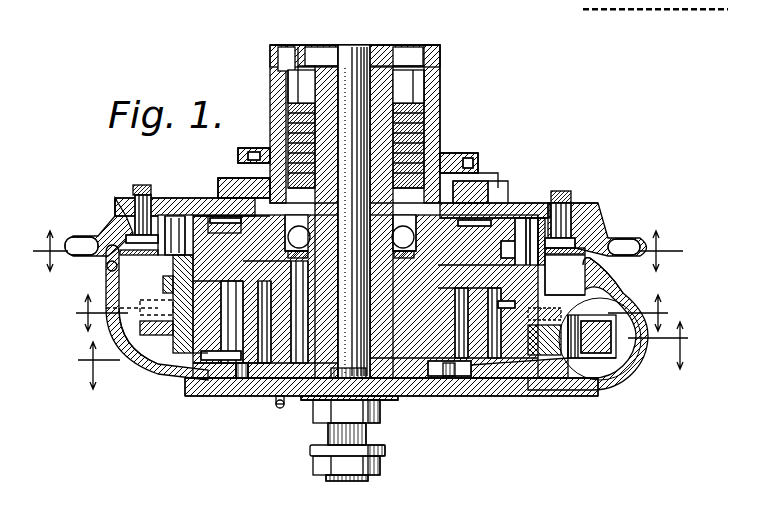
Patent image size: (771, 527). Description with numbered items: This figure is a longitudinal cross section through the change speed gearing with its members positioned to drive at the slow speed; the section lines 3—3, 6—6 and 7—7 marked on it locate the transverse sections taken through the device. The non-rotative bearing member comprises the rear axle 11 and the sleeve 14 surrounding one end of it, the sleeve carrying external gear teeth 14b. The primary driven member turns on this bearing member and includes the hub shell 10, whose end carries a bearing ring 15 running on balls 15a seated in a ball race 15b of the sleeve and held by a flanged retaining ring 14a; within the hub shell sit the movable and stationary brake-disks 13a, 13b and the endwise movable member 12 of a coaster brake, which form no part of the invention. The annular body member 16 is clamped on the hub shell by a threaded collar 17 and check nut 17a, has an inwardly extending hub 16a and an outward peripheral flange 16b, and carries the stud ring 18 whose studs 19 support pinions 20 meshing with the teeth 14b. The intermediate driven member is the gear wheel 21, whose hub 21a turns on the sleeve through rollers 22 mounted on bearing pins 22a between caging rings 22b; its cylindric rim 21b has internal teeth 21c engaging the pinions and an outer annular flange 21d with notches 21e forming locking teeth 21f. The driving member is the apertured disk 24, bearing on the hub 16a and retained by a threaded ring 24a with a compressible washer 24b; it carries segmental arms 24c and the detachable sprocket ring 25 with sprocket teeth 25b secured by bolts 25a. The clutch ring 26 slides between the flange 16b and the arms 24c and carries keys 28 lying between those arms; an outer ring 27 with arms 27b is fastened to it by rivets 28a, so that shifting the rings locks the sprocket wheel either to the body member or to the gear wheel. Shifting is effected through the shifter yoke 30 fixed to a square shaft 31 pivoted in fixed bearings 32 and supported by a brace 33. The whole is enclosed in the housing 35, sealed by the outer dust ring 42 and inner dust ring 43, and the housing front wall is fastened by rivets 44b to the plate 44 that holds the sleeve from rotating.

The section line 3— 3 is at (379, 355).
The section line 6— 6 is at (369, 313).
The section line 7— 7 is at (357, 251).
The hub shell 10 is at (265, 37).
The axle 11 is at (338, 38).
The endwise movable member 12 is at (268, 38).
The movable brake-disk 13a is at (400, 95).
The stationary brake-disk 13b is at (400, 118).
The sleeve 14 is at (372, 54).
The flanged retaining ring 14a is at (243, 143).
The external gear teeth 14b is at (308, 392).
The bearing ring 15 is at (440, 170).
The balls 15a is at (458, 165).
The ball race 15b is at (266, 130).
The annular body member 16 is at (522, 210).
The sleeve or hub 16a is at (462, 185).
The peripheral flange 16b is at (165, 330).
The internally threaded collar 17 is at (240, 200).
The check nut 17a is at (250, 176).
The stud-carrying ring 18 is at (207, 200).
The studs 19 is at (228, 388).
The pinions 20 is at (235, 372).
The gear wheel 21 is at (232, 370).
The hub 21a is at (412, 388).
The cylindric ring 21b is at (590, 265).
The internal gear teeth 21c is at (205, 372).
The annular flange 21d is at (498, 350).
The notches 21e is at (200, 355).
The locking teeth 21f is at (185, 346).
The cylindric rollers 22 is at (270, 392).
The bearing pins 22a is at (293, 392).
The caging rings 22b is at (388, 392).
The apertured disk 24 is at (172, 200).
The ring 24a is at (490, 165).
The washer 24b is at (495, 185).
The segmental arms 24c is at (542, 195).
The sprocket ring 25 is at (100, 220).
The bolts 25a is at (132, 178).
The sprocket teeth 25b is at (68, 228).
The clutch ring 26 is at (530, 292).
The outer ring 27 is at (150, 315).
The arms 27b is at (158, 292).
The keys 28 is at (160, 195).
The rivets 28a is at (98, 302).
The shifter yoke 30 is at (610, 352).
The square shaft 31 is at (604, 352).
The fixed bearings 32 is at (592, 357).
The brace 33 is at (565, 345).
The metallic housing 35 is at (140, 345).
The outer dust ring 42 is at (112, 246).
The inner dust ring 43 is at (100, 260).
The plate 44 is at (230, 372).
The rivets 44b is at (268, 388).